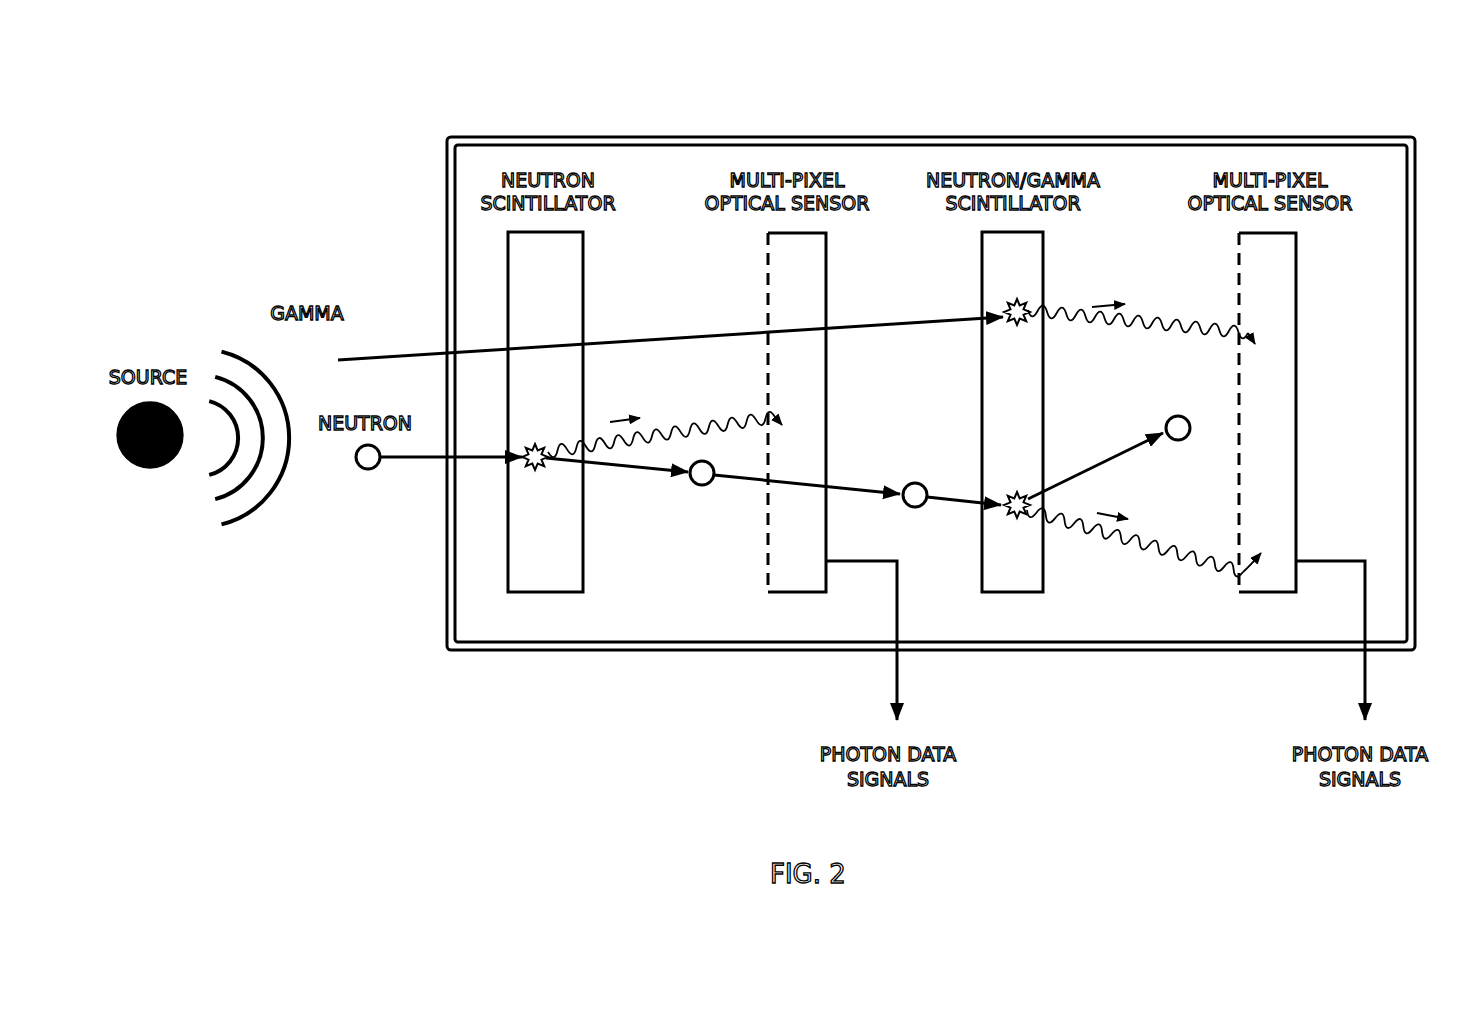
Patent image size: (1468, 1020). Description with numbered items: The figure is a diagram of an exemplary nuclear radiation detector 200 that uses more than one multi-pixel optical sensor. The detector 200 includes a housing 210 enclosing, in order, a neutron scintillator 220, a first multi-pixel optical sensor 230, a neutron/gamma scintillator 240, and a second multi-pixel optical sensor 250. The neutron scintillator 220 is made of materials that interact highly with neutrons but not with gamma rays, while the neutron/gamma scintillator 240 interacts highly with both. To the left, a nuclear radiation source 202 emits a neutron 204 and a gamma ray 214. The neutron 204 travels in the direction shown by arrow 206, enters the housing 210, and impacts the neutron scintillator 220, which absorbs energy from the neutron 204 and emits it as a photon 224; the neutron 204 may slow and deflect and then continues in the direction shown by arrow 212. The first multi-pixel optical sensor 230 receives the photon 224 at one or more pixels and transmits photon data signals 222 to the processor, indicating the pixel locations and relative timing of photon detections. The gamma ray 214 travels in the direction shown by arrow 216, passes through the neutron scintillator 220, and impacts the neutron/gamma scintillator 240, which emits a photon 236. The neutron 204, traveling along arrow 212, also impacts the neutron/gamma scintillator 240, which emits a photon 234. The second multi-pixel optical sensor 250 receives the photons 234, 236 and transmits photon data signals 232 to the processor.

The nuclear radiation detector 200 is at (318, 93).
The nuclear radiation source 202 is at (150, 468).
The neutron 204 is at (360, 468).
The arrow 206 is at (425, 462).
The housing 210 is at (908, 136).
The arrow 212 is at (652, 471).
The gamma ray 214 is at (312, 360).
The arrow 216 is at (422, 357).
The neutron scintillator 220 is at (583, 258).
The photon data signals 222 is at (928, 722).
The photon 224 is at (670, 423).
The first multi-pixel optical sensor 230 is at (826, 258).
The photon data signals 232 is at (1397, 722).
The photon 234 is at (1152, 536).
The photon 236 is at (1143, 316).
The neutron/gamma scintillator 240 is at (1043, 258).
The second multi-pixel optical sensor 250 is at (1296, 258).